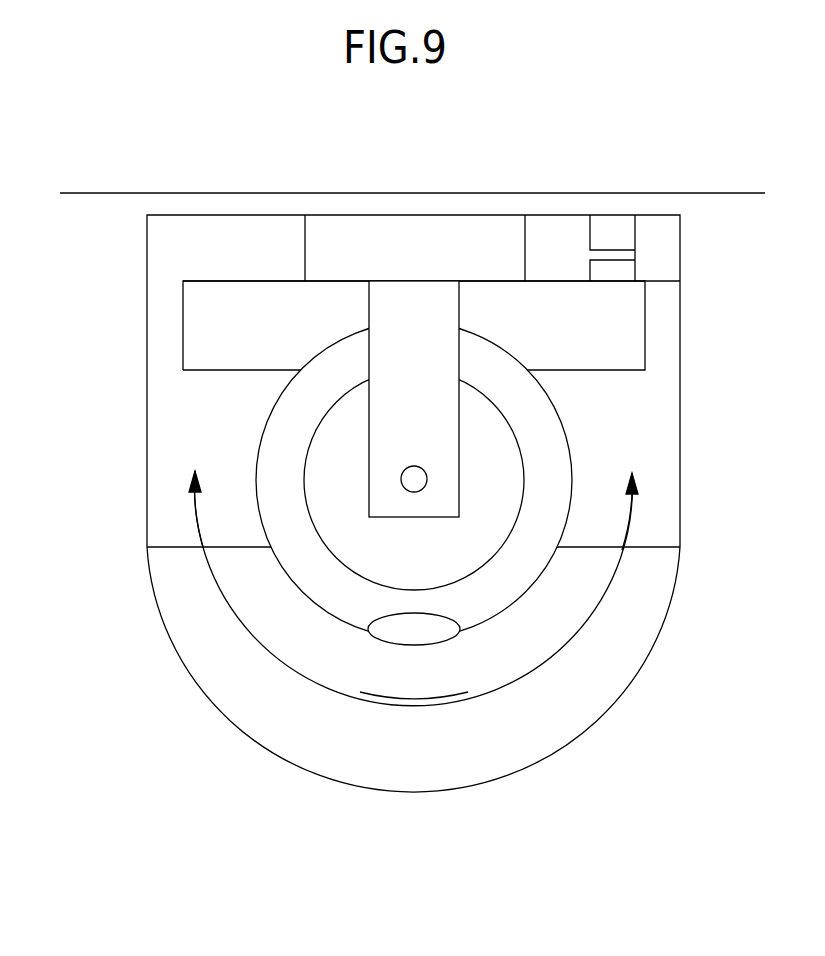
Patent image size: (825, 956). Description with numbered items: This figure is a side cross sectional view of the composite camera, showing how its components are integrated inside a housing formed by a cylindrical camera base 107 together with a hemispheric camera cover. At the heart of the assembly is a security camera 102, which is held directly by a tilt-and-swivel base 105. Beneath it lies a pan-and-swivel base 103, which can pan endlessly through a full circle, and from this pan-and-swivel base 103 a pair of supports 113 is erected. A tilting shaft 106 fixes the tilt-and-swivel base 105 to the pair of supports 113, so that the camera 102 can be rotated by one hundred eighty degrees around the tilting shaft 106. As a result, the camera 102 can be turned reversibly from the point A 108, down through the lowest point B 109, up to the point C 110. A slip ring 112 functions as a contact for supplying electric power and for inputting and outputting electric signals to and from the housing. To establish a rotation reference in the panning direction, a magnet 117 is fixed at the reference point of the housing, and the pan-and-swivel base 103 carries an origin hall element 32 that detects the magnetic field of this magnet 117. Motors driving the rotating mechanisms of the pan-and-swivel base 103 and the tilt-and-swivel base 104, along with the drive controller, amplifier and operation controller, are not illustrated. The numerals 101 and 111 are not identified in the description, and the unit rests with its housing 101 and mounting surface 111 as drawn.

The housing lower wall 101 is at (315, 792).
The security camera 102 is at (440, 670).
The pan-and-swivel base 103 is at (200, 298).
The tilt-and-swivel base 104 is at (607, 587).
The tilt-and-swivel base 105 is at (567, 440).
The tilting shaft 106 is at (415, 466).
The cylindrical camera base 107 is at (680, 390).
The point A 108 is at (180, 481).
The lowest point B 109 is at (412, 702).
The point C 110 is at (650, 482).
The mounting surface 111 is at (412, 178).
The slip ring 112 is at (325, 228).
The supports 113 is at (385, 327).
The magnet 117 is at (635, 234).
The origin hall element 32 is at (635, 268).